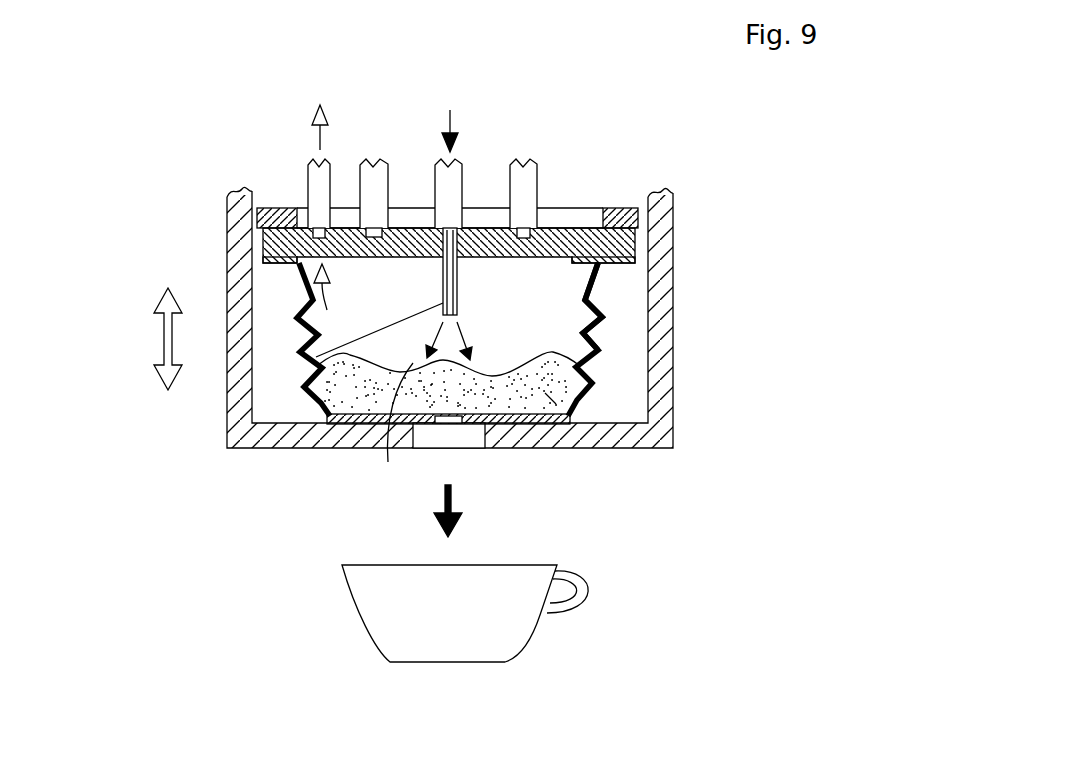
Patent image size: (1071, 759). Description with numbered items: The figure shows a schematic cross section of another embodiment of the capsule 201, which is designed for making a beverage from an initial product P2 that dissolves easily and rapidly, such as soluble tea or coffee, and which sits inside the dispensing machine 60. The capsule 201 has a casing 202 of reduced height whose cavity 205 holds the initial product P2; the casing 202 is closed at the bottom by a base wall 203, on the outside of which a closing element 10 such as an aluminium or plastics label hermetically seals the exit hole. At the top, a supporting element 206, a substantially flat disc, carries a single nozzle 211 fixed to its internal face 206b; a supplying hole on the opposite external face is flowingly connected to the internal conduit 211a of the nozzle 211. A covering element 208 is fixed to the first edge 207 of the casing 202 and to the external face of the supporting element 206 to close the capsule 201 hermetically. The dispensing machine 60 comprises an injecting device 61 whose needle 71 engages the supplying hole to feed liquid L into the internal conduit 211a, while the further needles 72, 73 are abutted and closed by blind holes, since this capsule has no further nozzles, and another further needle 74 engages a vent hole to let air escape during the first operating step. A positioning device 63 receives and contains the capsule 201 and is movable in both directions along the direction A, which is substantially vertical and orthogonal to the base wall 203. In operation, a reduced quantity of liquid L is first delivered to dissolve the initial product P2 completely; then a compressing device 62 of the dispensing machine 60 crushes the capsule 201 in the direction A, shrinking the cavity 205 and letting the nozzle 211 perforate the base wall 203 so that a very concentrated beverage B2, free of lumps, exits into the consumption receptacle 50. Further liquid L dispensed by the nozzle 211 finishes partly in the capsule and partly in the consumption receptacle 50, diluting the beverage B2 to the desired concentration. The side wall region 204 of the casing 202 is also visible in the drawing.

The capsule 201 is at (418, 264).
The injecting device 61 is at (263, 175).
The compressing device 62 is at (673, 214).
The positioning device 63 is at (227, 414).
The dispensing machine 60 is at (423, 342).
The further needle 74 is at (320, 178).
The further needle 72 is at (375, 178).
The needle 71 is at (466, 172).
The further needle 73 is at (528, 182).
The covering element 208 is at (594, 226).
The first edge 207 is at (263, 246).
The supporting element 206 is at (636, 240).
The internal face 206b is at (572, 262).
The capsule side wall 204 is at (600, 325).
The casing 202 is at (598, 403).
The internal conduit 211a is at (443, 300).
The nozzle 211 is at (316, 357).
The cavity 205 is at (545, 311).
The base wall 203 is at (344, 425).
The closing element 10 is at (458, 424).
The liquid L is at (398, 433).
The initial product P2 is at (545, 393).
The direction A is at (164, 340).
The beverage B2 is at (457, 520).
The consumption receptacle 50 is at (512, 633).